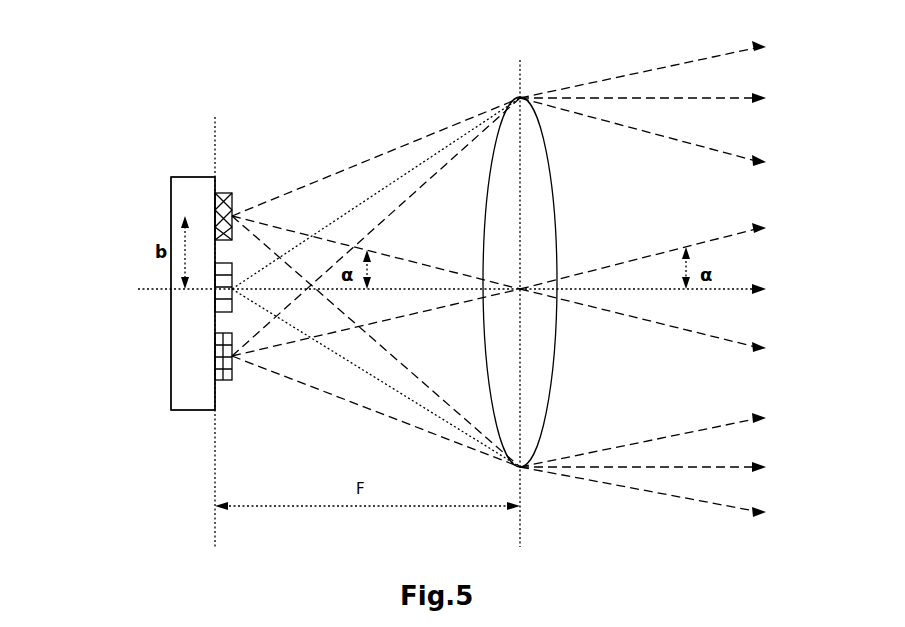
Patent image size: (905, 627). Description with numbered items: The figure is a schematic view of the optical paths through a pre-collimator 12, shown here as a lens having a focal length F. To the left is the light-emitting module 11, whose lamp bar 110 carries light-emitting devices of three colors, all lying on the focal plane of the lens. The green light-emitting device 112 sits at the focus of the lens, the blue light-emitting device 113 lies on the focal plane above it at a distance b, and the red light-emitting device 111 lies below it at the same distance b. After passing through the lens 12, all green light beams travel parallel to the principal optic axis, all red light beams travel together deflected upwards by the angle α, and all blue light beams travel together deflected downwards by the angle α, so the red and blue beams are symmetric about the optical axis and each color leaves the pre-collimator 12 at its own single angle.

The light-emitting module 11 is at (221, 253).
The lamp bar 110 is at (150, 301).
The red light-emitting device 111 is at (158, 319).
The green light-emitting device 112 is at (158, 248).
The blue light-emitting device 113 is at (158, 178).
The pre-collimator 12 is at (500, 254).